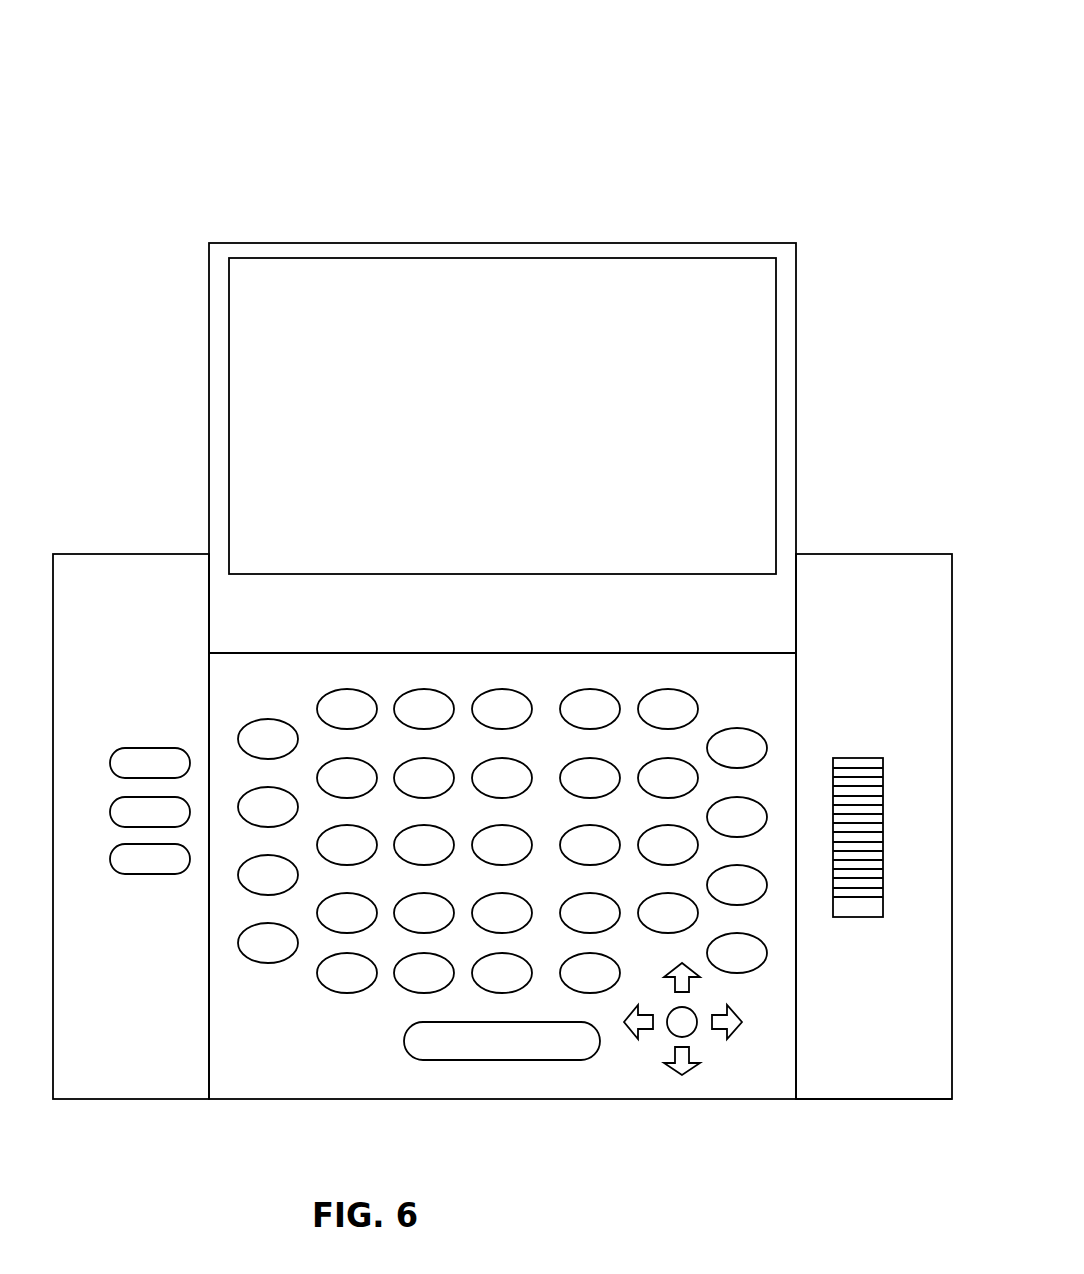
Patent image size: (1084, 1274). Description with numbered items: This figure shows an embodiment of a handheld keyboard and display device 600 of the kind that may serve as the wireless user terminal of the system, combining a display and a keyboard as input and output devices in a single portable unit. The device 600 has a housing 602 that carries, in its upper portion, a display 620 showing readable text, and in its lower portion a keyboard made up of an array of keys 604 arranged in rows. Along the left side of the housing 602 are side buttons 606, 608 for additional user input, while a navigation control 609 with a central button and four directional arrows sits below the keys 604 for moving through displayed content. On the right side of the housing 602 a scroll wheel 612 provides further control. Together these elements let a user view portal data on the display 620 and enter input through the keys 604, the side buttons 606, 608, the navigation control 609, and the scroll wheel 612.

The handheld device 600 is at (432, 70).
The housing 602 is at (476, 283).
The keys 604 is at (138, 760).
The side button 606 is at (112, 812).
The side button 608 is at (112, 867).
The navigation control 609 is at (703, 1040).
The scroll wheel 612 is at (862, 1100).
The display 620 is at (317, 278).